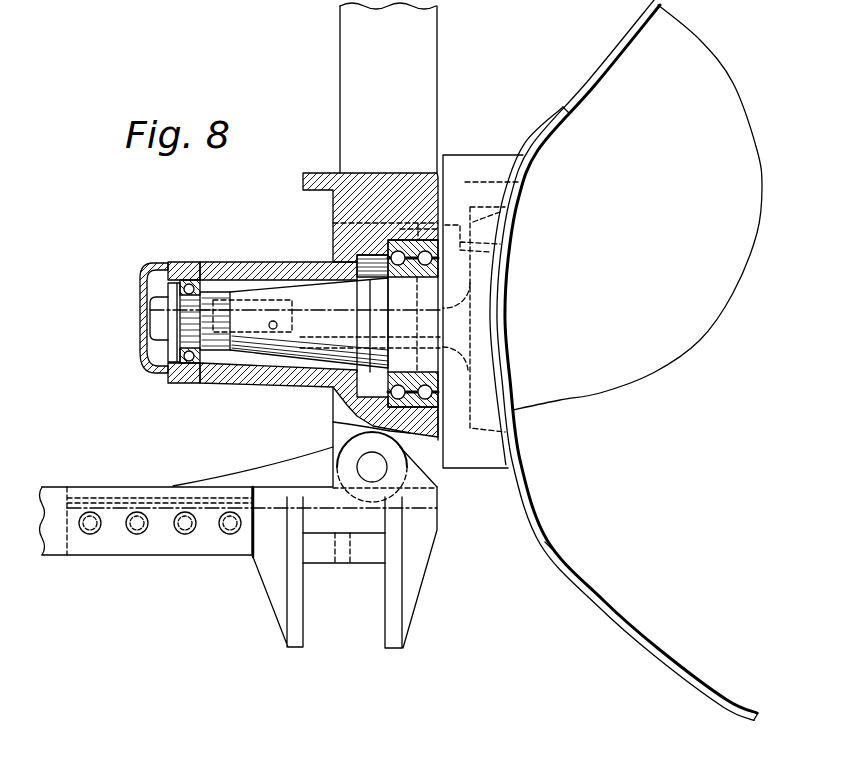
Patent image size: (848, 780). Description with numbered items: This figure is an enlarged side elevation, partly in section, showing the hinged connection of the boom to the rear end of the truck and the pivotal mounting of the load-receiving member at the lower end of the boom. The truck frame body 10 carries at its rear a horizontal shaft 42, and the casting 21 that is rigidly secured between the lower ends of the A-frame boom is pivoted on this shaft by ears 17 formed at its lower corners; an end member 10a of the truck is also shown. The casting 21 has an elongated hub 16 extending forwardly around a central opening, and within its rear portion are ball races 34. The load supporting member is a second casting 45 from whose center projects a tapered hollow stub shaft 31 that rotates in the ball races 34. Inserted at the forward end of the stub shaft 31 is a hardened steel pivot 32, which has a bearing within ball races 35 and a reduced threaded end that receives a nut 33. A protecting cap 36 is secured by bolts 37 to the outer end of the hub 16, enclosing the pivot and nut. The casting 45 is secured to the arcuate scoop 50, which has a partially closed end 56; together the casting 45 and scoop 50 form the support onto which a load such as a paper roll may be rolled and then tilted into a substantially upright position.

The frame body 10 is at (165, 545).
The end member 10a is at (250, 468).
The elongated hub 16 is at (247, 388).
The ears 17 is at (333, 458).
The casting 21 is at (438, 197).
The tapered hollow stub shaft 31 is at (295, 324).
The hardened steel pivot 32 is at (252, 316).
The nut 33 is at (163, 318).
The ball races 34 is at (438, 262).
The ball races 35 is at (200, 264).
The protecting cap 36 is at (152, 282).
The bolts 37 is at (160, 372).
The shaft 42 is at (367, 460).
The casting 45 is at (490, 462).
The scoop 50 is at (522, 452).
The partially closed end 56 is at (637, 207).